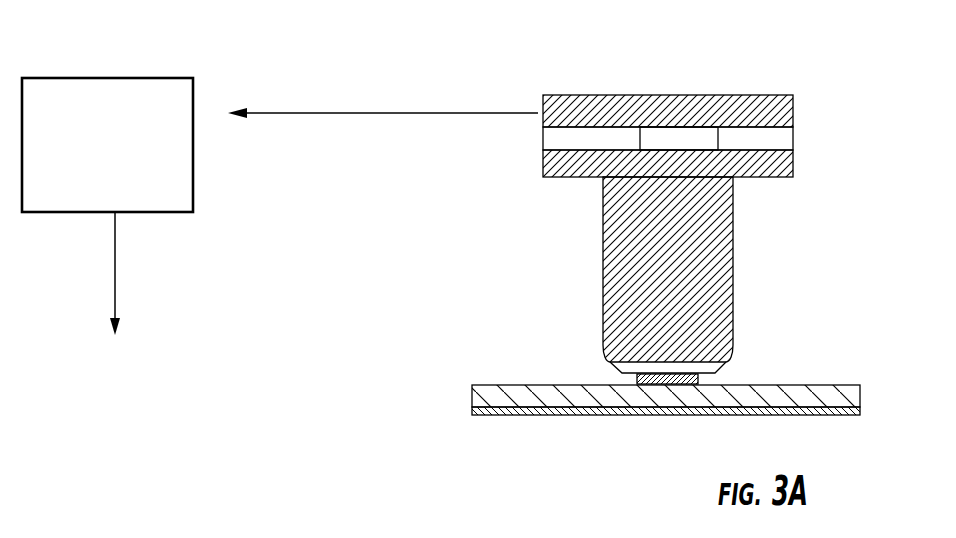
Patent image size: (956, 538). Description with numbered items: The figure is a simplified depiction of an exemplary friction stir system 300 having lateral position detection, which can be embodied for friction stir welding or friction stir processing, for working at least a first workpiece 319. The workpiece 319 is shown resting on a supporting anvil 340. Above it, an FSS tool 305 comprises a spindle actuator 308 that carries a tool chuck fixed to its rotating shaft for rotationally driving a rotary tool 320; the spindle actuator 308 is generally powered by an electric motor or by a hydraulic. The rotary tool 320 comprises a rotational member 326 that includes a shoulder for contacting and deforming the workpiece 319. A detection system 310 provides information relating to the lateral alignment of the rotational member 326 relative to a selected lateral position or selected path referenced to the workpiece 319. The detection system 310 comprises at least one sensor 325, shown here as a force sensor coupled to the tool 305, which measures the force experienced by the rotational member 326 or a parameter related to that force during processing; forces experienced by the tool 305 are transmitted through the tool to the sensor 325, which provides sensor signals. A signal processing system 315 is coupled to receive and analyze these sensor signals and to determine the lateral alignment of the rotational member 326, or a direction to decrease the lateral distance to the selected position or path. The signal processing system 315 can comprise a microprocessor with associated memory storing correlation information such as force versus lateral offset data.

The FSS system 300 is at (513, 492).
The FSS tool 305 is at (800, 277).
The spindle actuator 308 is at (733, 262).
The detection system 310 is at (700, 105).
The signal processing system 315 is at (110, 78).
The workpiece 319 is at (650, 422).
The rotary tool 320 is at (585, 380).
The sensor 325 is at (768, 95).
The rotational member 326 is at (715, 373).
The supporting anvil 340 is at (860, 412).